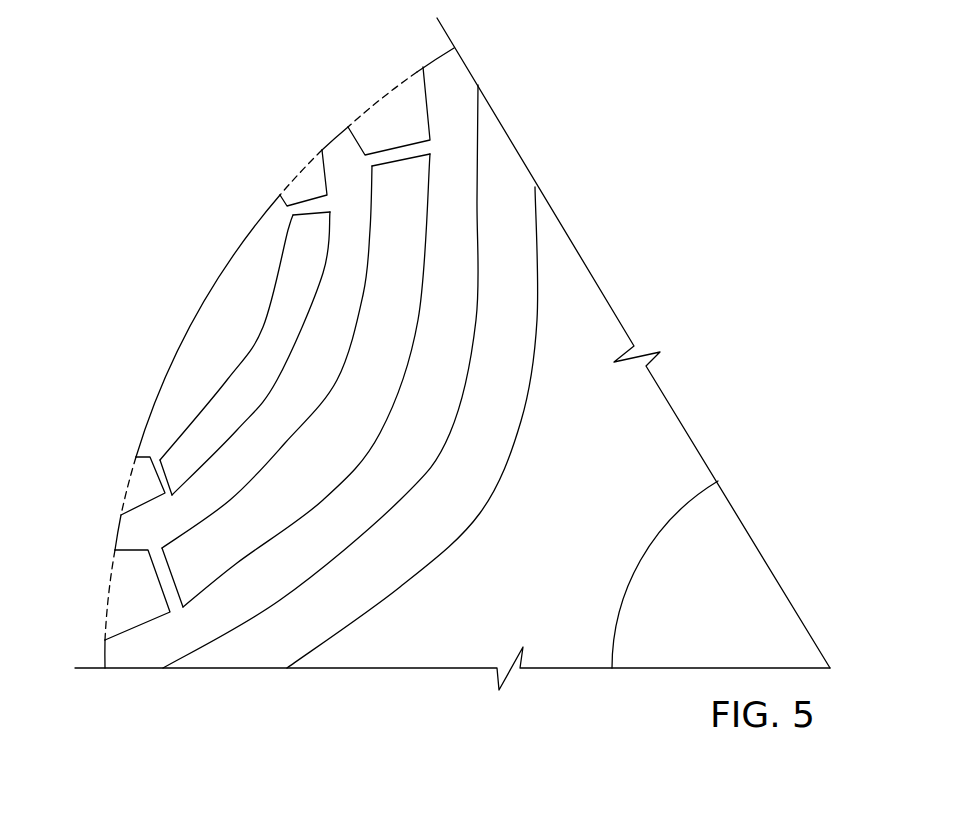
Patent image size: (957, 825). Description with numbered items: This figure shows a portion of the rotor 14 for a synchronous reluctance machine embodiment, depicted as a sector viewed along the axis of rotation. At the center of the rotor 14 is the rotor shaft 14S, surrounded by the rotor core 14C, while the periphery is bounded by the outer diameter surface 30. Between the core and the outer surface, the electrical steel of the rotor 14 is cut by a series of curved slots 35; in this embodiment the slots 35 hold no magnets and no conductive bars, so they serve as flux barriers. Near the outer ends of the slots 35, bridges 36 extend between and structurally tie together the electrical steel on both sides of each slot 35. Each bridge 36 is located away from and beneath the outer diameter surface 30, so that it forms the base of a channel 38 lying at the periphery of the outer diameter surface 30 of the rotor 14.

The rotor 14 is at (640, 289).
The rotor core 14C is at (596, 549).
The rotor shaft 14S is at (722, 607).
The outer diameter surface 30 is at (426, 62).
The slots 35 is at (266, 342).
The bridge 36 is at (418, 151).
The channel 38 is at (368, 117).